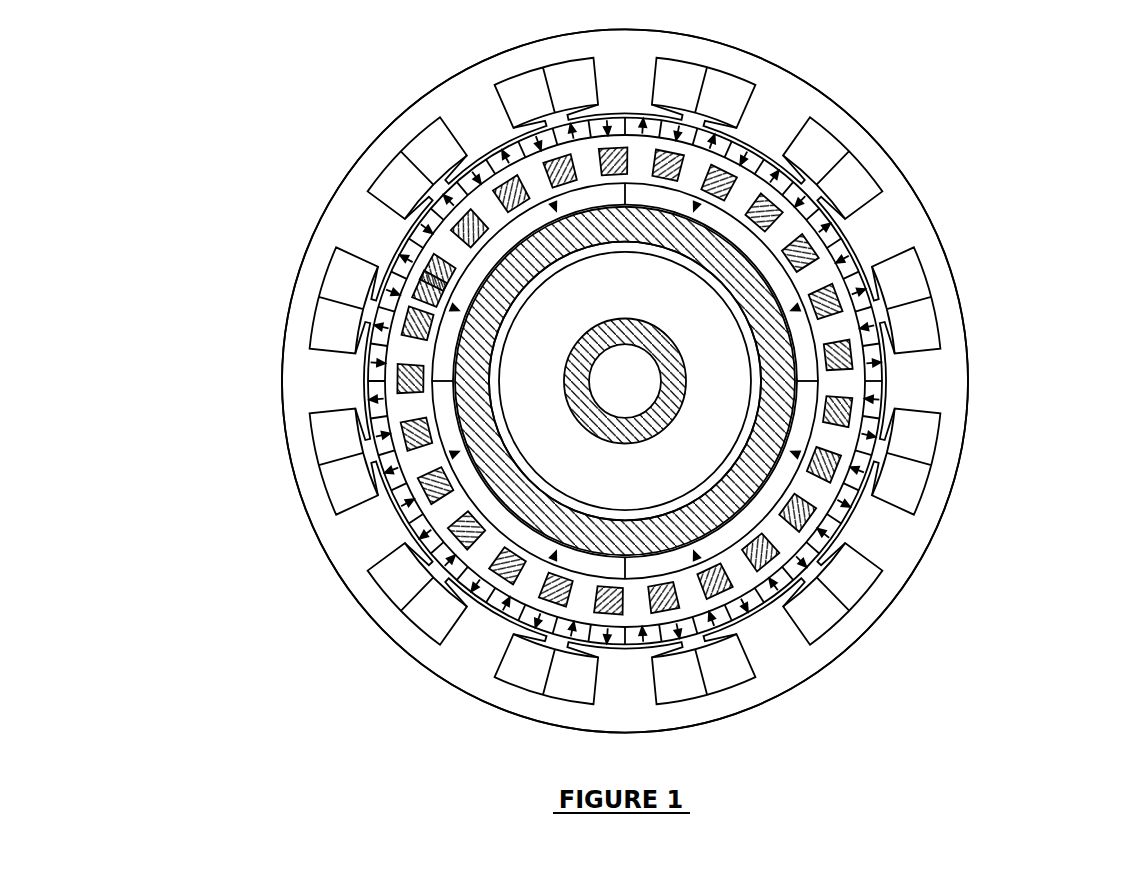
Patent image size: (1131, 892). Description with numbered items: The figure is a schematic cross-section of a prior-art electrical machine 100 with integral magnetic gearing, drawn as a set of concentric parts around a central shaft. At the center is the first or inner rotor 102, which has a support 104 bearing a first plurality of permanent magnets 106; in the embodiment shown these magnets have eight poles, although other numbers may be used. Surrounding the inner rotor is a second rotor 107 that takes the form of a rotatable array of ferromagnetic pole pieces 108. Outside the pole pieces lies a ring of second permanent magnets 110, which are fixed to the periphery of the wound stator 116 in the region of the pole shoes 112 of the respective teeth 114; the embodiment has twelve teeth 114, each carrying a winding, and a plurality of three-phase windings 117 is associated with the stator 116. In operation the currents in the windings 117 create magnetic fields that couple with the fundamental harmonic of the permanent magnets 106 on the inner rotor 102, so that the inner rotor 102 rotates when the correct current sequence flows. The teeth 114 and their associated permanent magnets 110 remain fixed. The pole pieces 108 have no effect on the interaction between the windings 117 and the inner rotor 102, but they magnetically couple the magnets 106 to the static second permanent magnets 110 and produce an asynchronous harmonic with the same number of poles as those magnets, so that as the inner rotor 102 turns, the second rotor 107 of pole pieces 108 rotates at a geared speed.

The electrical machine 100 is at (976, 182).
The inner rotor 102 is at (490, 468).
The support 104 is at (472, 410).
The permanent magnets 106 is at (650, 565).
The second rotor 107 is at (420, 287).
The ferromagnetic pole pieces 108 is at (712, 180).
The second permanent magnets 110 is at (840, 514).
The pole shoes 112 is at (893, 318).
The teeth 114 is at (948, 398).
The wound stator 116 is at (967, 453).
The 3-phase windings 117 is at (328, 441).